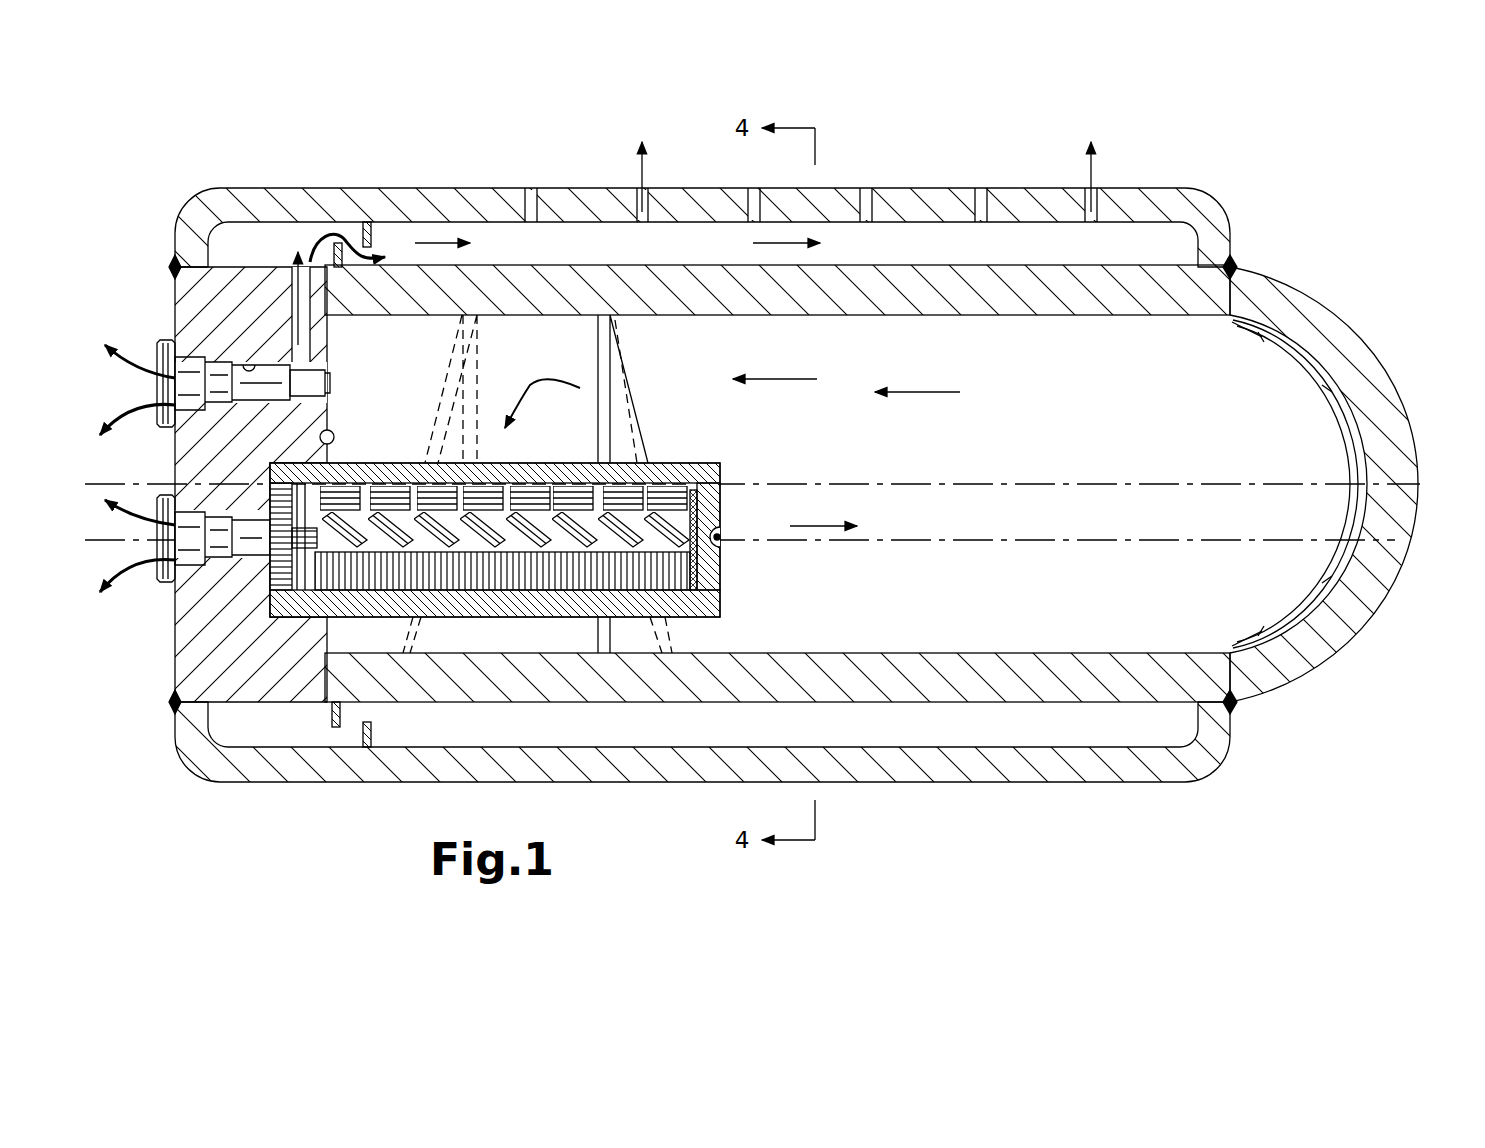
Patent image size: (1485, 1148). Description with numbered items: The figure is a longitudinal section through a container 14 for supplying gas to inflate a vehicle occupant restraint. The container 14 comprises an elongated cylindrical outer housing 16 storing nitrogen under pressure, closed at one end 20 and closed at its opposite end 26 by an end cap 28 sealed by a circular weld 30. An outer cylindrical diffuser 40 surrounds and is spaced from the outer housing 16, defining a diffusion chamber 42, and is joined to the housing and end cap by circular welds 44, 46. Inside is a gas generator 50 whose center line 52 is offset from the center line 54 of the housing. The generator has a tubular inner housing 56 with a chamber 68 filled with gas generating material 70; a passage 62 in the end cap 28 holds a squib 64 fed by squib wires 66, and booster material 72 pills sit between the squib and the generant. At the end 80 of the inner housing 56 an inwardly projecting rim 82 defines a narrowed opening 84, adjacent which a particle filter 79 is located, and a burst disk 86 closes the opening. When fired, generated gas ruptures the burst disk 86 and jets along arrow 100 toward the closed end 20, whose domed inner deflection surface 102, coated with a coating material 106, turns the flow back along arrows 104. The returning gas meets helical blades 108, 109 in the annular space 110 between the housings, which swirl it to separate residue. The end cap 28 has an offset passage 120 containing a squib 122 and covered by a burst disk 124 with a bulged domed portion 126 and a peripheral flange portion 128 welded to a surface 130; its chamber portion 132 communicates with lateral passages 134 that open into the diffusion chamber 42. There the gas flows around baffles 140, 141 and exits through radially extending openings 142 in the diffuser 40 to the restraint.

The container 14 is at (1270, 270).
The outer housing 16 is at (890, 290).
The closed end 20 is at (1355, 365).
The opposite end 26 is at (357, 677).
The end cap 28 is at (217, 658).
The circular weld 30 is at (315, 370).
The outer cylindrical diffuser 40 is at (1010, 212).
The diffusion chamber 42 is at (1140, 238).
The circular weld 44 is at (1232, 268).
The circular weld 46 is at (175, 267).
The gas generator 50 is at (693, 448).
The center line 52 is at (1100, 543).
The center line 54 is at (1100, 484).
The tubular inner housing 56 is at (598, 608).
The passage 62 is at (248, 552).
The squib 64 is at (190, 529).
The squib wires 66 is at (137, 560).
The chamber 68 is at (540, 480).
The gas generating material 70 is at (545, 572).
The booster material 72 is at (330, 478).
The particle filter 79 is at (720, 470).
The end 80 is at (722, 605).
The inwardly projecting rim 82 is at (722, 508).
The narrowed opening 84 is at (722, 552).
The burst disk 86 is at (717, 537).
The arrow 100 is at (818, 525).
The domed inner deflection surface 102 is at (1332, 392).
The arrows 104 is at (817, 378).
The coating material 106 is at (1262, 337).
The helical blade 108 is at (465, 380).
The helical blade 109 is at (617, 392).
The annular space 110 is at (437, 330).
The passage 120 is at (247, 366).
The squib 122 is at (218, 392).
The burst disk 124 is at (336, 374).
The bulged domed portion 126 is at (330, 380).
The peripheral flange portion 128 is at (328, 372).
The surface 130 is at (320, 437).
The chamber portion 132 is at (243, 366).
The passages 134 is at (300, 345).
The baffle 140 is at (338, 240).
The baffle 141 is at (368, 222).
The radially extending openings 142 is at (636, 192).